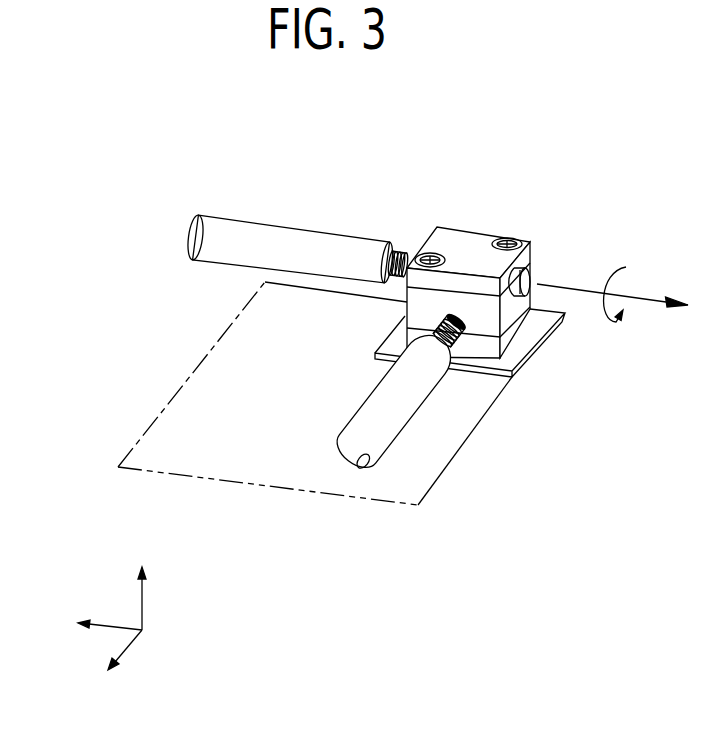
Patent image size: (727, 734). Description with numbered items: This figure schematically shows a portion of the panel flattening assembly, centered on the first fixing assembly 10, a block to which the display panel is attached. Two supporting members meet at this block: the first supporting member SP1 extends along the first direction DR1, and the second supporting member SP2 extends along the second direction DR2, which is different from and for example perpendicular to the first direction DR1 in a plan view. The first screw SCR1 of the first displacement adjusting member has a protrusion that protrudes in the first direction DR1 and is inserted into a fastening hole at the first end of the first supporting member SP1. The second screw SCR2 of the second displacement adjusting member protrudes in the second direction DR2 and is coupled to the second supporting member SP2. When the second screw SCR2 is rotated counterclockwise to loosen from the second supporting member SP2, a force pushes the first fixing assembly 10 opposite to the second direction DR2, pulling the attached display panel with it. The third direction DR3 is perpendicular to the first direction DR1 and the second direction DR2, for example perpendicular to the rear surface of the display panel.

The first fixing assembly 10 is at (488, 220).
The first supporting member SP1 is at (408, 408).
The second supporting member SP2 is at (293, 235).
The first screw SCR1 is at (455, 343).
The second screw SCR2 is at (396, 250).
The first direction DR1 is at (114, 667).
The second direction DR2 is at (87, 623).
The third direction DR3 is at (141, 583).